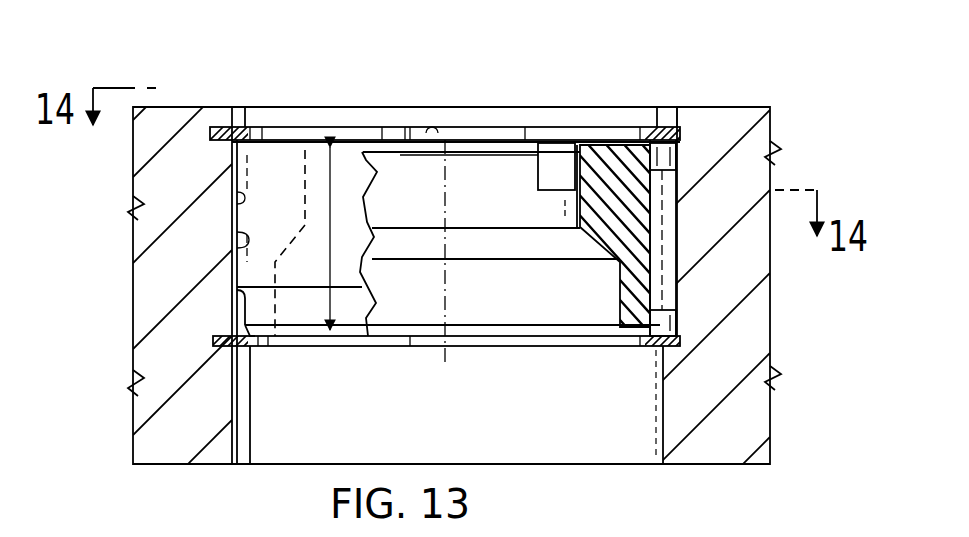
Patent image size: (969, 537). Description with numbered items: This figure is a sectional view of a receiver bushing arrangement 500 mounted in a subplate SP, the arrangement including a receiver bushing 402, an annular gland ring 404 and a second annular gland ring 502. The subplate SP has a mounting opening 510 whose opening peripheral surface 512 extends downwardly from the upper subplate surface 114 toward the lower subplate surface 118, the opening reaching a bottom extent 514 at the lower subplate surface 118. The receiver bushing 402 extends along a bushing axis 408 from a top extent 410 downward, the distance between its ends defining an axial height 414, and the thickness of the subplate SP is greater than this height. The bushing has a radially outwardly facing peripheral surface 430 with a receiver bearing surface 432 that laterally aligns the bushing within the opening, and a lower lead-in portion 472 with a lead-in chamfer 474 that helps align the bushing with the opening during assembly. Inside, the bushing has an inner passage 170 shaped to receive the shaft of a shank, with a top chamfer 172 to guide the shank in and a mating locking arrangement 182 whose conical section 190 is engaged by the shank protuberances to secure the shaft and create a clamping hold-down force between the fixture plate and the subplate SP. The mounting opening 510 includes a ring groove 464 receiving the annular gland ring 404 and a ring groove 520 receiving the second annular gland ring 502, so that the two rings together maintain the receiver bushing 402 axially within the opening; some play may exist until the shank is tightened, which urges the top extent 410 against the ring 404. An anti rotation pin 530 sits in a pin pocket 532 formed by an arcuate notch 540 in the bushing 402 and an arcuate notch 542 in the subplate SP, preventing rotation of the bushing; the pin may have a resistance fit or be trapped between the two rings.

The upper subplate surface 114 is at (690, 107).
The lower subplate surface 118 is at (712, 467).
The inner passage 170 is at (556, 188).
The top chamfer 172 is at (487, 145).
The mating locking arrangement 182 is at (614, 252).
The conical section 190 is at (598, 247).
The receiver bushing 402 is at (607, 150).
The annular gland ring 404 is at (643, 116).
The bushing axis 408 is at (455, 360).
The top extent 410 is at (291, 140).
The axial height 414 is at (345, 212).
The radially outwardly facing peripheral surface 430 is at (230, 273).
The receiver bearing surface 432 is at (230, 154).
The ring groove 464 is at (218, 130).
The lower lead-in portion 472 is at (232, 300).
The lead-in chamfer 474 is at (222, 334).
The receiver bushing arrangement 500 is at (236, 66).
The second annular gland ring 502 is at (641, 352).
The mounting opening 510 is at (247, 238).
The opening peripheral surface 512 is at (243, 196).
The bottom extent 514 is at (512, 460).
The ring groove 520 is at (239, 347).
The anti rotation pin 530 is at (668, 222).
The pin pocket 532 is at (684, 177).
The arcuate notch 540 is at (622, 283).
The arcuate notch 542 is at (664, 292).
The subplate SP is at (706, 106).